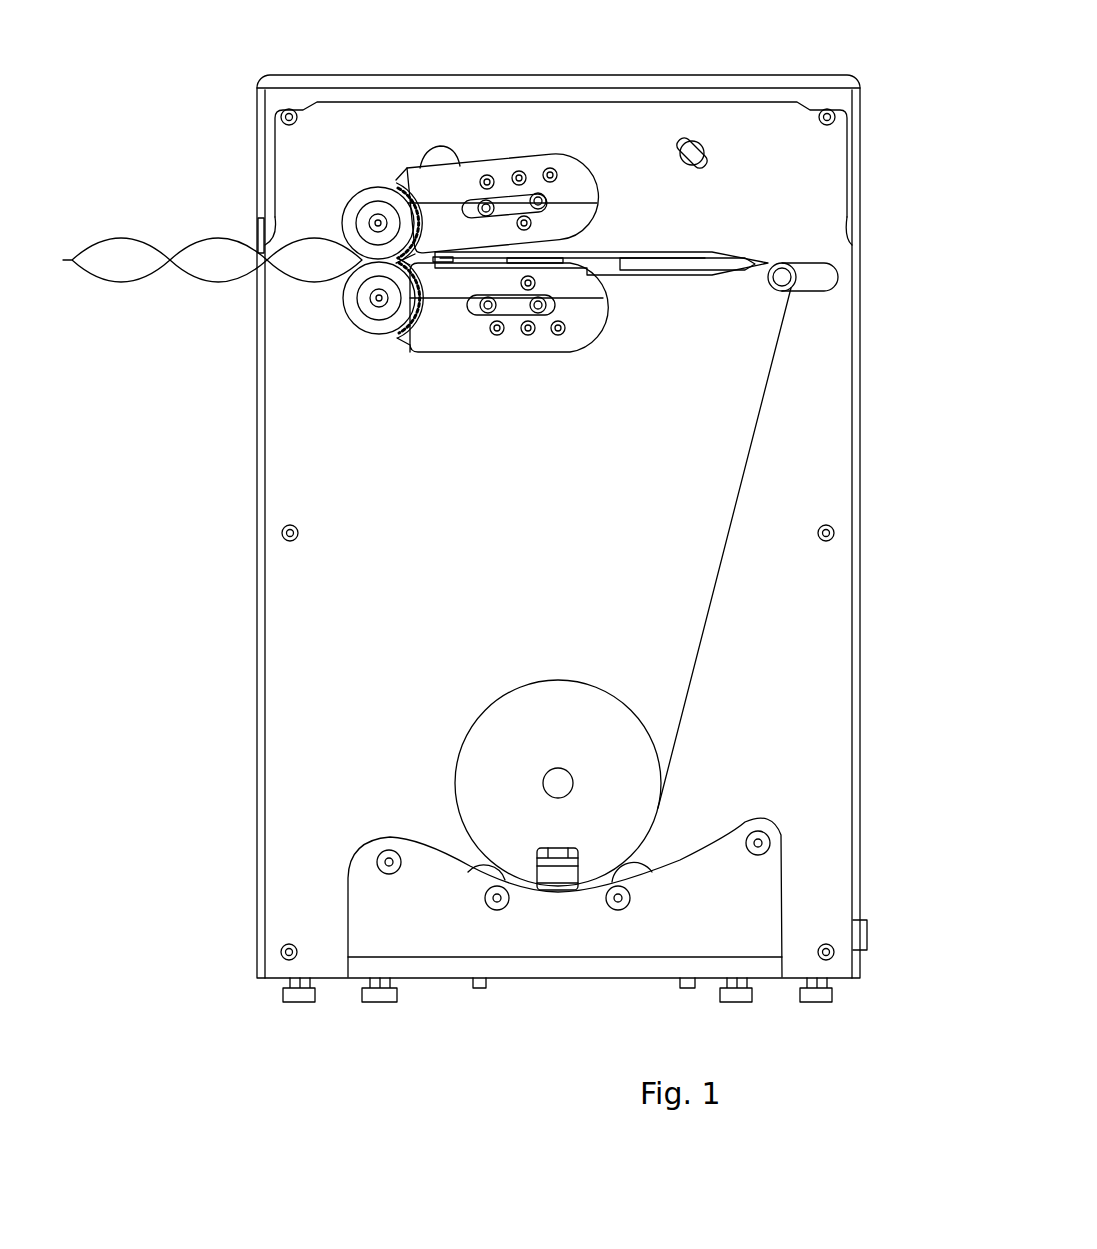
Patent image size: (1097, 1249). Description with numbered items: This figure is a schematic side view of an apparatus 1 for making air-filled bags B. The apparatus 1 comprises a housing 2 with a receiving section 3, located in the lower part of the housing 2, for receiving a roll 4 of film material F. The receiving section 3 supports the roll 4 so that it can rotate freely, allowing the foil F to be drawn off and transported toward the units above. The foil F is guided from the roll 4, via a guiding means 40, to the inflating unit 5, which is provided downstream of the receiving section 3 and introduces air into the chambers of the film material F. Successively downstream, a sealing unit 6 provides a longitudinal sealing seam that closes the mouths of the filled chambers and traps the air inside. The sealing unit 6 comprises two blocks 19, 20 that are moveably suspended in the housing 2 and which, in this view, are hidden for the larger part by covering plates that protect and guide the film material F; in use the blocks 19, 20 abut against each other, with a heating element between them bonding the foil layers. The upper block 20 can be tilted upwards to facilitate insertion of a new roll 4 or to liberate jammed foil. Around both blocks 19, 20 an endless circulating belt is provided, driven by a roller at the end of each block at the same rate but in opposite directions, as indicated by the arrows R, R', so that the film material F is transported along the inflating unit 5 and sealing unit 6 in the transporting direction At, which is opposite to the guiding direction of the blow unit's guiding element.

The apparatus 1 is at (766, 68).
The housing 2 is at (565, 480).
The receiving section 3 is at (565, 940).
The roll 4 is at (565, 727).
The inflating unit 5 is at (643, 226).
The sealing unit 6 is at (527, 132).
The lower block 19 is at (517, 303).
The upper block 20 is at (510, 207).
The guiding means 40 is at (782, 275).
The air-filled bags B is at (119, 258).
The film material F is at (740, 469).
The rotation direction of roller R is at (319, 199).
The rotation direction of opposite roller R' is at (317, 323).
The transporting direction At is at (626, 244).